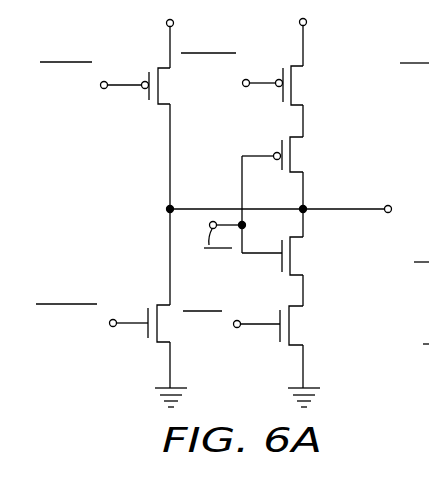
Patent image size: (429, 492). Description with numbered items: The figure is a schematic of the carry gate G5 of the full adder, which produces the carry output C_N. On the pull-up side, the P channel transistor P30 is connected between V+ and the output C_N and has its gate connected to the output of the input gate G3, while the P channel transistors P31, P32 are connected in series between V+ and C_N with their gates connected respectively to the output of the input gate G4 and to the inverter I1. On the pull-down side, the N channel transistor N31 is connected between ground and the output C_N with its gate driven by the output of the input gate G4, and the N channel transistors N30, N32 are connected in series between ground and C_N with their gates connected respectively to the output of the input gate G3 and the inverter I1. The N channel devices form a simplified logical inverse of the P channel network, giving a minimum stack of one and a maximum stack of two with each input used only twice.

The carry gate G5 is at (334, 52).
The P channel transistor P30 is at (136, 78).
The P channel transistor P31 is at (287, 82).
The P channel transistor P32 is at (287, 187).
The N channel transistor N30 is at (283, 356).
The N channel transistor N31 is at (149, 356).
The N channel transistor N32 is at (286, 271).